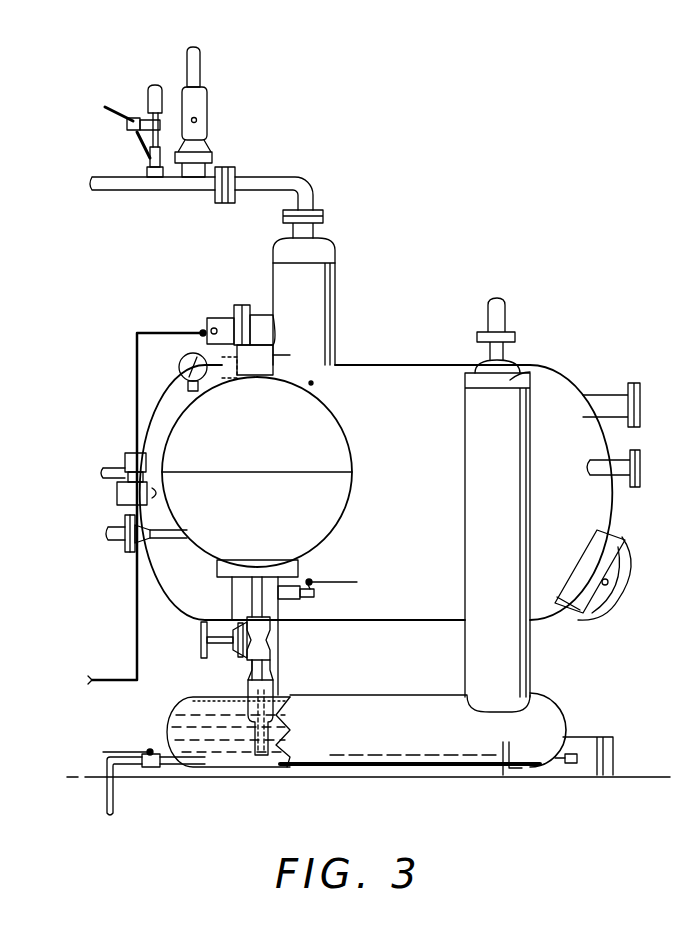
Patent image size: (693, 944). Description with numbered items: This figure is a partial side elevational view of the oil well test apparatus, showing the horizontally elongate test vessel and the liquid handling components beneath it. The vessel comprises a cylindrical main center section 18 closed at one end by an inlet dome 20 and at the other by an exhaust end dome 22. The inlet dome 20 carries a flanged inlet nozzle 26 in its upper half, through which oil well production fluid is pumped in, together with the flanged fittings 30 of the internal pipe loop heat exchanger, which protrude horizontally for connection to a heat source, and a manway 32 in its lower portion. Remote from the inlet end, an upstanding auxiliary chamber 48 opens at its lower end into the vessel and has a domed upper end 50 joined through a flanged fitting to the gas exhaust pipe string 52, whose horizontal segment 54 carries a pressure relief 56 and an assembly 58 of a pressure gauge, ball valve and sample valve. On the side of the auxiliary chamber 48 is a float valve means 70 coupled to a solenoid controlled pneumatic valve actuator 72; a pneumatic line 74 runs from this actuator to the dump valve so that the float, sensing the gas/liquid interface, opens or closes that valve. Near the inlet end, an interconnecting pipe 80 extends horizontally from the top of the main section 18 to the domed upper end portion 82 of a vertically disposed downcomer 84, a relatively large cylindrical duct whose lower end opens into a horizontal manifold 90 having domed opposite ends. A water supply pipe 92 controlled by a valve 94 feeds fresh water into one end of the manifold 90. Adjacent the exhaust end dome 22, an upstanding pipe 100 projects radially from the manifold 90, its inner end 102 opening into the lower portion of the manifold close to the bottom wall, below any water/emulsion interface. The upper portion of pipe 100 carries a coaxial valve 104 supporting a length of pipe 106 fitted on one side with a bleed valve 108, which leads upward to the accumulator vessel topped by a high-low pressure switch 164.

The cylindrical main center section 18 is at (424, 365).
The inlet dome 20 is at (612, 506).
The exhaust end dome 22 is at (168, 400).
The flanged inlet nozzle 26 is at (605, 398).
The flanged fittings 30 is at (634, 462).
The manway 32 is at (590, 615).
The auxiliary chamber 48 is at (337, 281).
The domed upper end 50 is at (336, 249).
The gas exhaust pipe string 52 is at (84, 182).
The horizontal segment 54 is at (165, 191).
The pressure relief 56 is at (208, 106).
The assembly of pressure gauge, ball valve and sample valve 58 is at (132, 96).
The float valve means 70 is at (263, 307).
The solenoid controlled pneumatic valve actuator 72 is at (218, 318).
The pneumatic line 74 is at (137, 617).
The interconnecting pipe 80 is at (501, 306).
The domed upper end portion 82 is at (527, 372).
The downcomer 84 is at (467, 476).
The manifold 90 is at (365, 697).
The water supply pipe 92 is at (107, 800).
The valve 94 is at (146, 772).
The upstanding pipe 100 is at (248, 690).
The inner end 102 is at (292, 772).
The coaxial valve 104 is at (270, 643).
The length of pipe 106 is at (232, 593).
The bleed valve 108 is at (316, 596).
The high-low pressure switch 164 is at (265, 360).